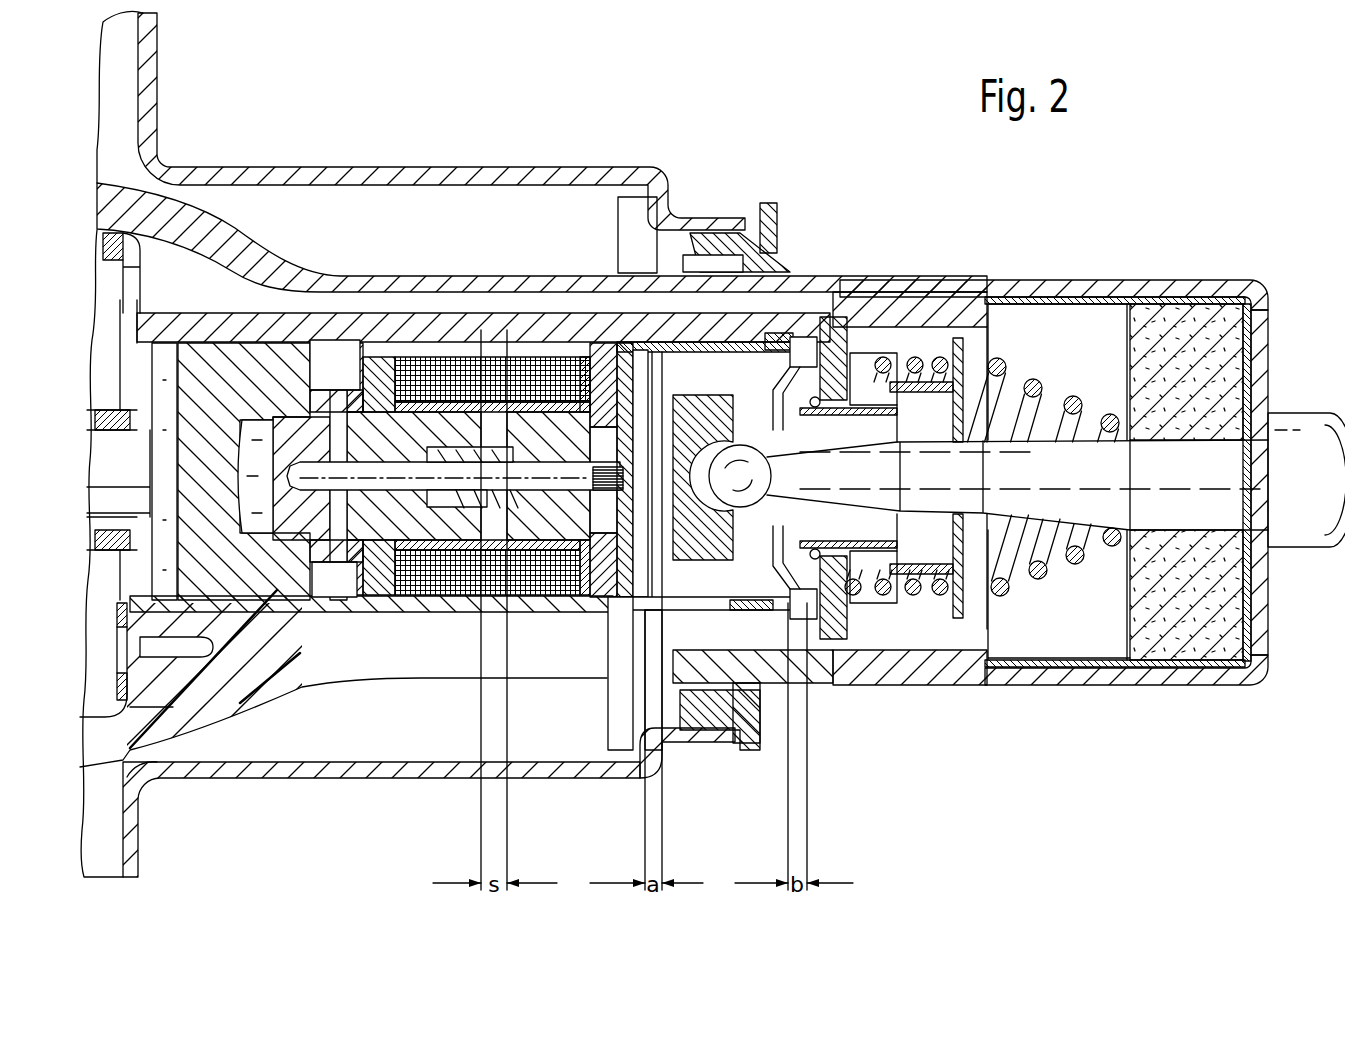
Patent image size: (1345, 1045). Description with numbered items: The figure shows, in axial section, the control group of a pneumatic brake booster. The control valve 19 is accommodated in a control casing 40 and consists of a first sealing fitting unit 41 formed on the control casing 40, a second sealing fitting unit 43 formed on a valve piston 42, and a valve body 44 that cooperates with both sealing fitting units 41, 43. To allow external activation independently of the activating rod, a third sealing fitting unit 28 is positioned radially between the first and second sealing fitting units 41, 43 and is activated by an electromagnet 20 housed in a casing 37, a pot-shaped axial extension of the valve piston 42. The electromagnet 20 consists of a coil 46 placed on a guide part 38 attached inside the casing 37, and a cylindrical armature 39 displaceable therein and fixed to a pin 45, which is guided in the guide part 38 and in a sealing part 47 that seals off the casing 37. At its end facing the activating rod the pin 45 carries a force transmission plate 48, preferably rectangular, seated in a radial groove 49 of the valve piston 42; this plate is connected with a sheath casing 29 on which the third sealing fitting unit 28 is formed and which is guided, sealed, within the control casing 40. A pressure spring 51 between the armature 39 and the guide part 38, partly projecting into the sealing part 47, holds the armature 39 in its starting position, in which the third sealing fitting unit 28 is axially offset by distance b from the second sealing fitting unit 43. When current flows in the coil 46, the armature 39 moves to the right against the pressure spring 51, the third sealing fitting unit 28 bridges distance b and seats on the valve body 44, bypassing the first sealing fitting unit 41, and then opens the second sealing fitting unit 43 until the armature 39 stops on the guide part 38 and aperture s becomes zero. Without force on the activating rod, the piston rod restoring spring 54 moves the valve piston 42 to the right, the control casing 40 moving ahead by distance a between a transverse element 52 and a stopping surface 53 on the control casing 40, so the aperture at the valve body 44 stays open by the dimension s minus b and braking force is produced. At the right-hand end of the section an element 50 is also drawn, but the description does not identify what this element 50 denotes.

The control valve 19 is at (873, 276).
The electromagnet 20 is at (500, 337).
The third sealing fitting unit 28 is at (787, 330).
The sheath casing 29 is at (783, 707).
The casing 37 is at (413, 607).
The guide part 38 is at (545, 440).
The armature 39 is at (340, 525).
The control casing 40 is at (1118, 290).
The first sealing fitting unit 41 is at (836, 335).
The valve piston 42 is at (683, 440).
The second sealing fitting unit 43 is at (797, 587).
The valve body 44 is at (858, 352).
The pin 45 is at (380, 478).
The coil 46 is at (455, 597).
The sealing part 47 is at (318, 520).
The force transmission plate 48 is at (605, 372).
The radial groove 49 is at (657, 410).
The push rod head 50 is at (1313, 440).
The pressure spring 51 is at (438, 473).
The transverse element 52 is at (665, 650).
The stopping surface 53 is at (628, 640).
The piston rod restoring spring 54 is at (1040, 583).